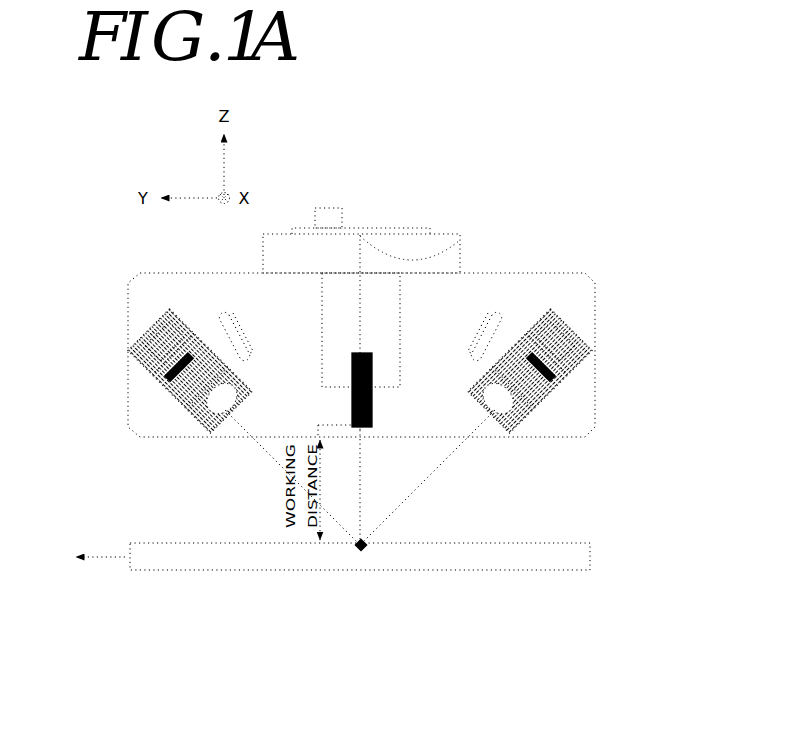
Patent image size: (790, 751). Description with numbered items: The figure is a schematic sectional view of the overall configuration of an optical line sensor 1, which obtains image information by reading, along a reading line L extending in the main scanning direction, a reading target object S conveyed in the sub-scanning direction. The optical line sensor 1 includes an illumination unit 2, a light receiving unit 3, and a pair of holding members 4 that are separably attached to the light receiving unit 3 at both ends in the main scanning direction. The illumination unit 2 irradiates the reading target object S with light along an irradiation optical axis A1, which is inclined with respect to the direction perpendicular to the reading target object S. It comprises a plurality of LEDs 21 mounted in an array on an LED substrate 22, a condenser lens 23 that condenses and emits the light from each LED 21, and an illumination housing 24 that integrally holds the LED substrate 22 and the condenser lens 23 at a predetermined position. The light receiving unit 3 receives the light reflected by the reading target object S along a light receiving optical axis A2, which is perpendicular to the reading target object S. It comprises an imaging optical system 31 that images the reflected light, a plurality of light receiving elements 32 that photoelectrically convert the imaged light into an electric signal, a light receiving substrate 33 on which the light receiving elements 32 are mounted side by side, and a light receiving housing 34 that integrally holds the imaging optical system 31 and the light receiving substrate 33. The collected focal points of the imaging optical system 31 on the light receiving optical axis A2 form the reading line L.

The optical line sensor 1 is at (391, 135).
The illumination unit 2 is at (400, 330).
The light receiving unit 3 is at (387, 283).
The holding members 4 is at (603, 300).
The LEDs 21 is at (566, 392).
The LED substrate 22 is at (568, 367).
The condenser lens 23 is at (531, 422).
The illumination housing 24 is at (591, 335).
The imaging optical system 31 is at (380, 391).
The light receiving elements 32 is at (367, 241).
The light receiving substrate 33 is at (397, 228).
The light receiving housing 34 is at (447, 232).
The irradiation optical axis A1 is at (268, 458).
The light receiving optical axis A2 is at (366, 483).
The reading line L is at (368, 559).
The reading target object S is at (554, 577).